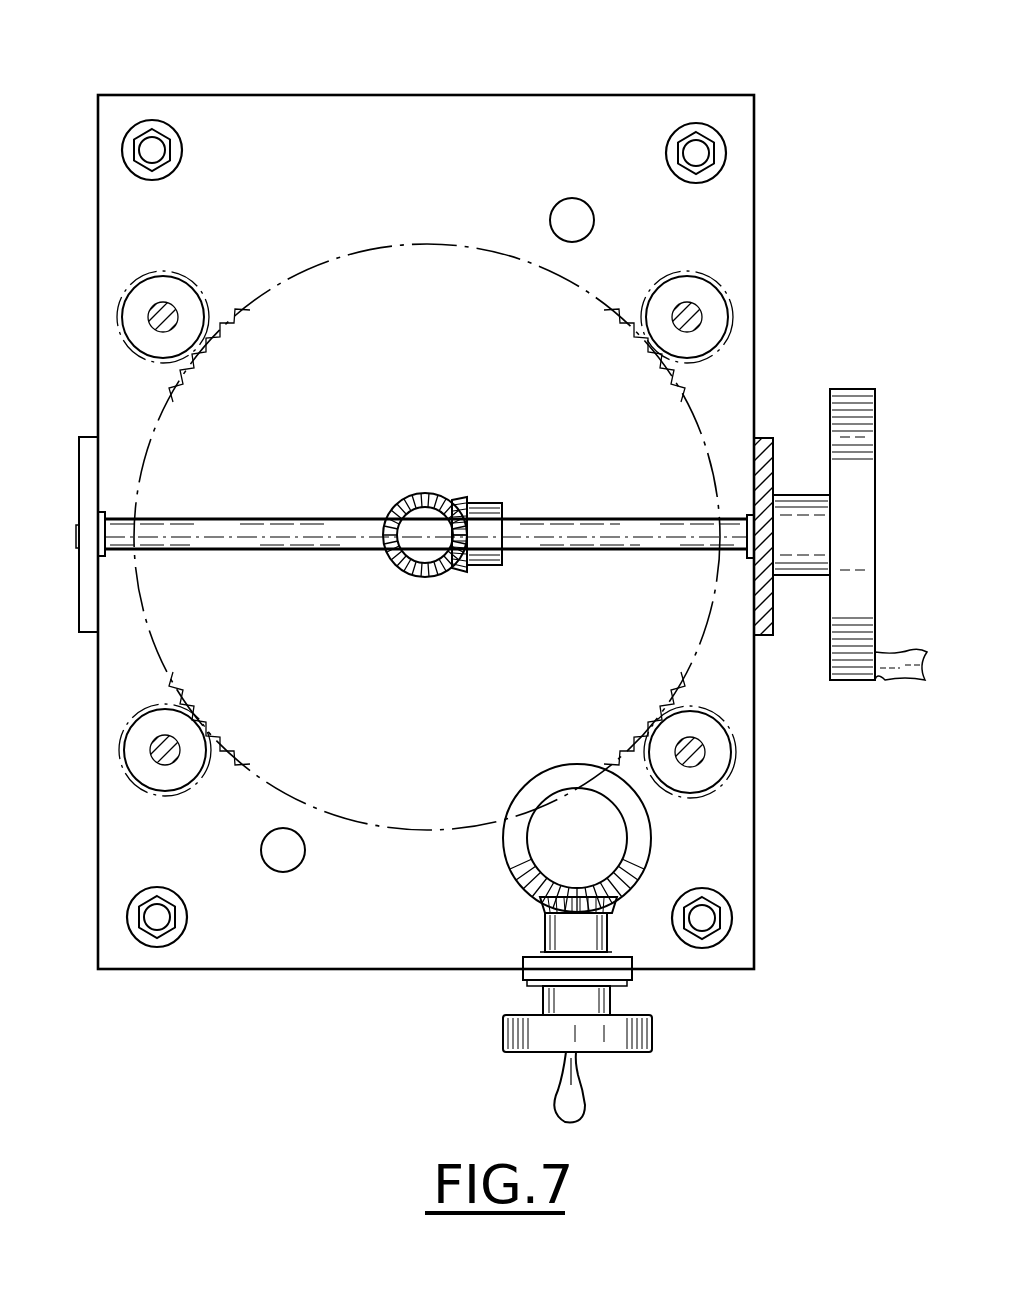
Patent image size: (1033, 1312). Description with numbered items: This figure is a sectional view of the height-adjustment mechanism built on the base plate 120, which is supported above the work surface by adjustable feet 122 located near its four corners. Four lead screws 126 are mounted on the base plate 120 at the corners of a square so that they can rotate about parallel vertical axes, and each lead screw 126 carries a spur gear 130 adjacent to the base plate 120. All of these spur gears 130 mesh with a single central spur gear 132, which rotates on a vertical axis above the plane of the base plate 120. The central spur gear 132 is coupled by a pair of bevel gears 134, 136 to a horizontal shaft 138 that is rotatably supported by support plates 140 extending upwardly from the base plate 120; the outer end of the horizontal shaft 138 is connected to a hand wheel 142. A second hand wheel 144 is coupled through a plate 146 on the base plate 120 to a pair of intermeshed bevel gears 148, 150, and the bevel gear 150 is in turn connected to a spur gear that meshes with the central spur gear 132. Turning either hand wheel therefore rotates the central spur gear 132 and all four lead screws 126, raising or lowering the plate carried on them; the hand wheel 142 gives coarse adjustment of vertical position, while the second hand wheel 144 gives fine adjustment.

The base plate 120 is at (380, 108).
The adjustable feet 122 is at (152, 150).
The lead screws 126 is at (163, 318).
The spur gear 130 is at (178, 283).
The central spur gear 132 is at (468, 258).
The bevel gear 134 is at (400, 505).
The bevel gear 136 is at (487, 502).
The horizontal shaft 138 is at (572, 521).
The support plates 140 is at (79, 452).
The hand wheel 142 is at (875, 403).
The second hand wheel 144 is at (655, 1028).
The plate 146 is at (530, 975).
The bevel gear 148 is at (552, 903).
The bevel gear 150 is at (647, 838).